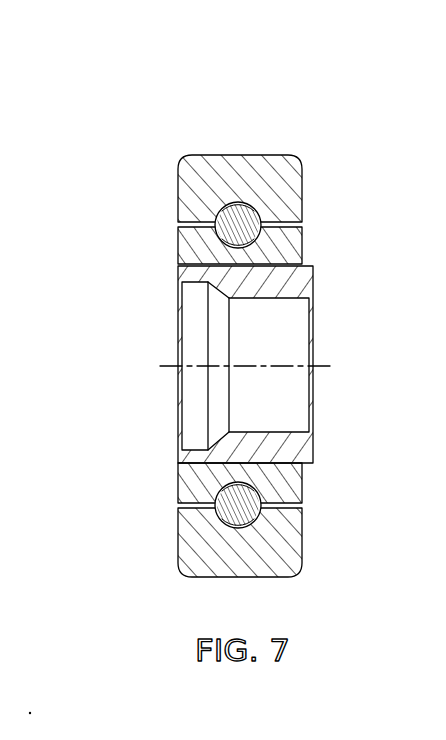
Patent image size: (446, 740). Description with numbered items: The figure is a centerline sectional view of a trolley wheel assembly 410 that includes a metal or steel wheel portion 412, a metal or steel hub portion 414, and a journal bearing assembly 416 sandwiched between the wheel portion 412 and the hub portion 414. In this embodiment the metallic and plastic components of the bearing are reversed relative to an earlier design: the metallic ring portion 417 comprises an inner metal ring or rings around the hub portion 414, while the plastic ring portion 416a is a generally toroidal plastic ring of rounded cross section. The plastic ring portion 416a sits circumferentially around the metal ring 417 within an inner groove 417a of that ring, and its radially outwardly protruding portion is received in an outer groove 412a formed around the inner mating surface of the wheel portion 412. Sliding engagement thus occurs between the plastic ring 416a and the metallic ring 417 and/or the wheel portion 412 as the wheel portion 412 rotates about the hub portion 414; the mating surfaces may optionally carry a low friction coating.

The trolley wheel assembly 410 is at (234, 131).
The wheel portion 412 is at (272, 152).
The outer groove 412a is at (184, 186).
The hub portion 414 is at (316, 298).
The journal bearing assembly 416 is at (158, 237).
The plastic ring portion 416a is at (232, 229).
The metallic ring portion 417 is at (175, 251).
The inner groove 417a is at (268, 260).